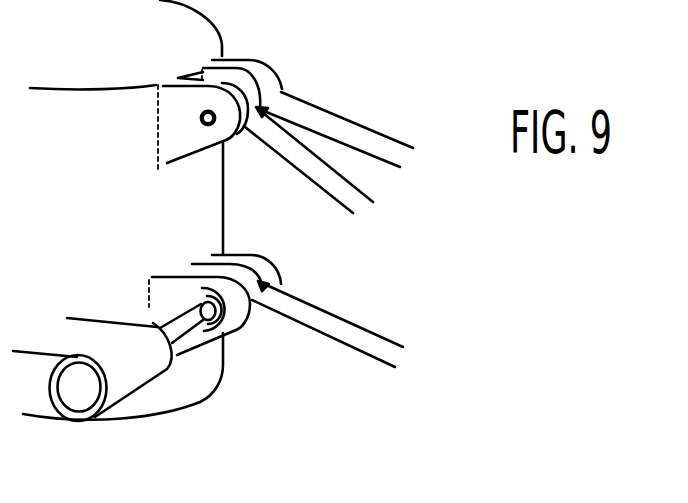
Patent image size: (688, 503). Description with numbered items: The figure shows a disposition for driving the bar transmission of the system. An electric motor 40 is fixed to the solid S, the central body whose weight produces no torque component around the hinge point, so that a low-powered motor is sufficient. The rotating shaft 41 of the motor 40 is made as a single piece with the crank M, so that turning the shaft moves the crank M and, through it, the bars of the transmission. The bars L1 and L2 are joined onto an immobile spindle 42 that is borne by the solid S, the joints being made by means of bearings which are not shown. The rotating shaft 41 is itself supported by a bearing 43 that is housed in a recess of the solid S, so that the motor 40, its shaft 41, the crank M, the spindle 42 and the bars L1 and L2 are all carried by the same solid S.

The motor 40 is at (120, 380).
The rotating shaft 41 is at (222, 372).
The immobile spindle 42 is at (200, 124).
The bearing 43 is at (176, 277).
The solid S is at (88, 425).
The crank M is at (332, 322).
The bar L1 is at (378, 132).
The bar L2 is at (360, 192).